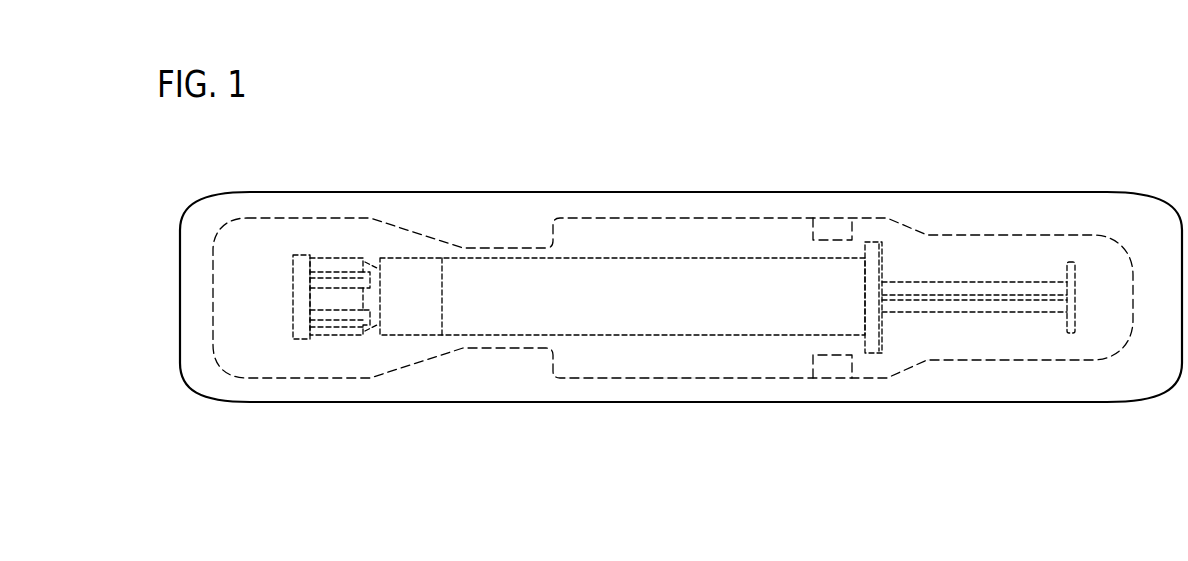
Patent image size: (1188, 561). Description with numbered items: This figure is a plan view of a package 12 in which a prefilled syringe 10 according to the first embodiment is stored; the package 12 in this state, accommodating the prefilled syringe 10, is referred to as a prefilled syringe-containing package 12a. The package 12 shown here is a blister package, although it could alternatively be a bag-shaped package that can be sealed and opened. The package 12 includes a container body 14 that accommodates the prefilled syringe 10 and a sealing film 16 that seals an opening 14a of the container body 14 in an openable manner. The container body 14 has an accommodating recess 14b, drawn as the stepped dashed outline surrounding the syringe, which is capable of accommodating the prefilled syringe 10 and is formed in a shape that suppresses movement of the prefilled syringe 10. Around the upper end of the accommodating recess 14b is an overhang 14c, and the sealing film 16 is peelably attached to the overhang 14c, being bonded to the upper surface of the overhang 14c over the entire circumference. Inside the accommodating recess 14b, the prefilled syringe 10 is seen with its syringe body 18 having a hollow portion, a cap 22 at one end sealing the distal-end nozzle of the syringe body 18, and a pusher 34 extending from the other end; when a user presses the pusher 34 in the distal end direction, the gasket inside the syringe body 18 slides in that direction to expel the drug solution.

The prefilled syringe 10 is at (655, 301).
The package 12 is at (975, 192).
The prefilled syringe-containing package 12a is at (678, 134).
The container body 14 is at (362, 402).
The opening 14a is at (695, 370).
The accommodating recess 14b is at (643, 353).
The overhang 14c is at (947, 387).
The sealing film 16 is at (492, 385).
The syringe body 18 is at (767, 312).
The cap 22 is at (307, 300).
The pusher 34 is at (960, 308).